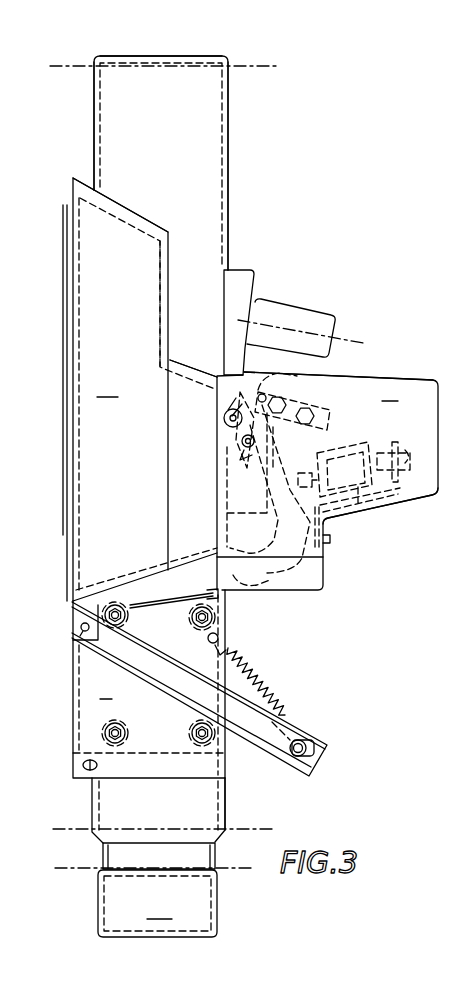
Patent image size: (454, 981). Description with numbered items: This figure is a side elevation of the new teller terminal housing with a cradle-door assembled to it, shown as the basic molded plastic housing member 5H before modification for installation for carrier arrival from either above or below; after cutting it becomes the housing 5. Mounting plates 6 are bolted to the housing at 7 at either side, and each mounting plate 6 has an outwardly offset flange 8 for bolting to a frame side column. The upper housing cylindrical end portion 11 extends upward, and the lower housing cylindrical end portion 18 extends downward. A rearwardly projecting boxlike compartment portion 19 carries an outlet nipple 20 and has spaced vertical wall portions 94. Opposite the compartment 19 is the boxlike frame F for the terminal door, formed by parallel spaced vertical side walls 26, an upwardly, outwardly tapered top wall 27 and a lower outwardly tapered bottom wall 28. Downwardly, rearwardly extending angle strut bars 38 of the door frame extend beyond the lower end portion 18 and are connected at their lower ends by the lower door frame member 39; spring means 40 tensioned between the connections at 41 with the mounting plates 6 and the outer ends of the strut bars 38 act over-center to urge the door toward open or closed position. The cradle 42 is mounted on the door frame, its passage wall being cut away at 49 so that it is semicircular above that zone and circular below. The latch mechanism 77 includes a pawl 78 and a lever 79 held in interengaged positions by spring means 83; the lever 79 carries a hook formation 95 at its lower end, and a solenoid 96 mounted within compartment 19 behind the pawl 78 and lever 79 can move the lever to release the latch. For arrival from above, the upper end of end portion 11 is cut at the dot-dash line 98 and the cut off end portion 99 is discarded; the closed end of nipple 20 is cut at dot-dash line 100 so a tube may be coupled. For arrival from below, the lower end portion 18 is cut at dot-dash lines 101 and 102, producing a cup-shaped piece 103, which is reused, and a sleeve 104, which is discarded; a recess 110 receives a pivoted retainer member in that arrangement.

The housing 5 is at (232, 152).
The basic molded plastic housing member 5H is at (280, 214).
The mounting plate 6 is at (149, 684).
The bolted connection of mounting plate 7 is at (103, 730).
The outwardly offset flange 8 is at (147, 752).
The upper housing cylindrical end portion 11 is at (128, 118).
The lower housing cylindrical end portion 18 is at (192, 805).
The boxlike compartment portion 19 is at (327, 481).
The outlet nipple 20 is at (285, 318).
The vertical side wall 26 is at (140, 389).
The top wall 27 is at (140, 215).
The bottom wall 28 is at (134, 580).
The angle strut bar 38 is at (163, 675).
The lower door frame member 39 is at (300, 738).
The spring means 40 is at (255, 682).
The spring connection 41 is at (226, 633).
The cradle 42 is at (162, 303).
The cut-away zone of cradle passage wall 49 is at (197, 390).
The latch mechanism 77 is at (234, 436).
The pawl 78 is at (290, 374).
The lever 79 is at (226, 494).
The spring means 83 is at (258, 450).
The vertical wall portion 94 is at (358, 390).
The hook formation 95 is at (280, 590).
The solenoid 96 is at (370, 510).
The dot-dash line 98 is at (247, 66).
The cut off end portion 99 is at (205, 52).
The dot-dash line 100 is at (348, 335).
The dot-dash line 101 is at (80, 870).
The dot-dash line 102 is at (82, 827).
The cup-shaped piece 103 is at (157, 903).
The sleeve 104 is at (130, 860).
The recess 110 is at (253, 283).
The terminal door frame F is at (118, 198).